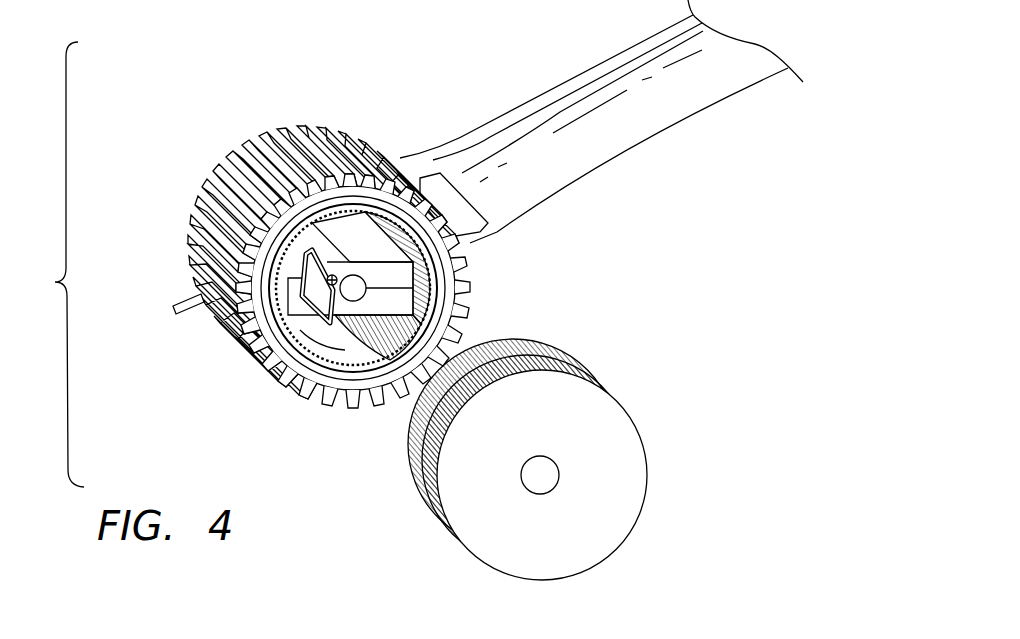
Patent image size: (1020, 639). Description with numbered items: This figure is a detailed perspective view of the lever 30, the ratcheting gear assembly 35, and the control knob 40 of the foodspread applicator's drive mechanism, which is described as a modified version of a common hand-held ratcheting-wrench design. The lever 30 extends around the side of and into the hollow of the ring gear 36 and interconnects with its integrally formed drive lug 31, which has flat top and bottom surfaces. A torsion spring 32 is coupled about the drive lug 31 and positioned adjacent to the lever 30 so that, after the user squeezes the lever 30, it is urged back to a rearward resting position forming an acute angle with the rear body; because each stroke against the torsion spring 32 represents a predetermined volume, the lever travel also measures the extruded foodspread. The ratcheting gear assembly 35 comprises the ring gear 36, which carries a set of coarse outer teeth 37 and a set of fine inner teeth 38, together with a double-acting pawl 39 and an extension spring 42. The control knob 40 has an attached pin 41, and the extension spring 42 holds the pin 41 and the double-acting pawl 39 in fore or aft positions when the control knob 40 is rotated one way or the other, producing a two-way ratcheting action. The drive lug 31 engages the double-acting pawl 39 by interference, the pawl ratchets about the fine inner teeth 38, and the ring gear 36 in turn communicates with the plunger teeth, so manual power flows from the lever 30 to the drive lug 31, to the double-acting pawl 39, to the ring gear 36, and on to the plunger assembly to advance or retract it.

The lever 30 is at (705, 108).
The drive lug 31 is at (402, 300).
The torsion spring 32 is at (192, 318).
The ratcheting gear assembly 35 is at (50, 264).
The ring gear 36 is at (360, 195).
The coarse outer teeth 37 is at (205, 184).
The fine inner teeth 38 is at (423, 330).
The double-acting pawl 39 is at (347, 343).
The control knob 40 is at (617, 395).
The pin 41 is at (307, 247).
The extension spring 42 is at (302, 268).